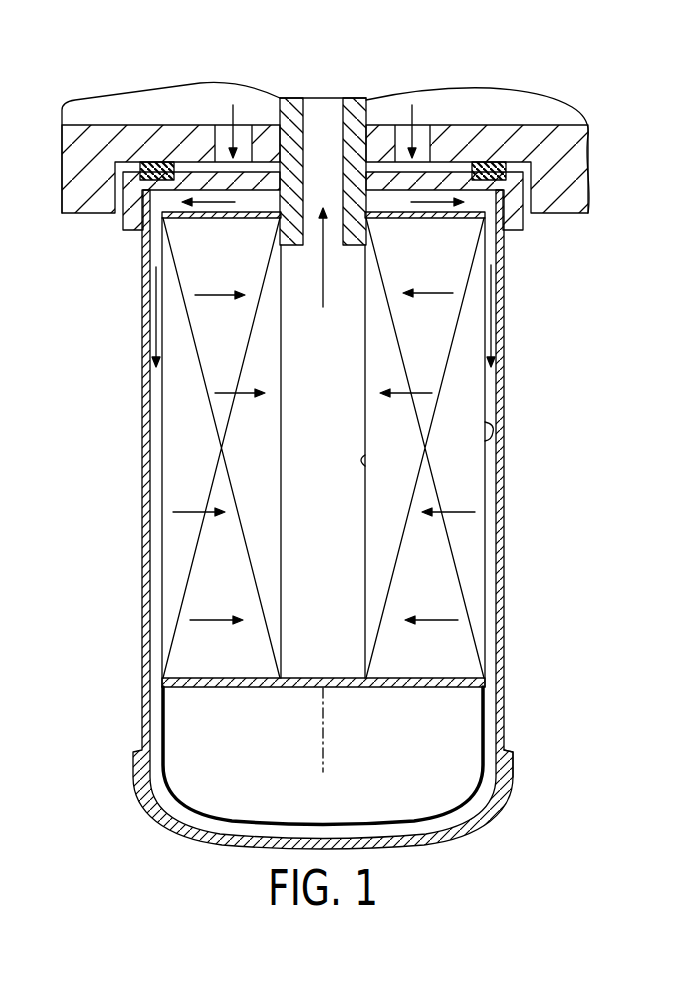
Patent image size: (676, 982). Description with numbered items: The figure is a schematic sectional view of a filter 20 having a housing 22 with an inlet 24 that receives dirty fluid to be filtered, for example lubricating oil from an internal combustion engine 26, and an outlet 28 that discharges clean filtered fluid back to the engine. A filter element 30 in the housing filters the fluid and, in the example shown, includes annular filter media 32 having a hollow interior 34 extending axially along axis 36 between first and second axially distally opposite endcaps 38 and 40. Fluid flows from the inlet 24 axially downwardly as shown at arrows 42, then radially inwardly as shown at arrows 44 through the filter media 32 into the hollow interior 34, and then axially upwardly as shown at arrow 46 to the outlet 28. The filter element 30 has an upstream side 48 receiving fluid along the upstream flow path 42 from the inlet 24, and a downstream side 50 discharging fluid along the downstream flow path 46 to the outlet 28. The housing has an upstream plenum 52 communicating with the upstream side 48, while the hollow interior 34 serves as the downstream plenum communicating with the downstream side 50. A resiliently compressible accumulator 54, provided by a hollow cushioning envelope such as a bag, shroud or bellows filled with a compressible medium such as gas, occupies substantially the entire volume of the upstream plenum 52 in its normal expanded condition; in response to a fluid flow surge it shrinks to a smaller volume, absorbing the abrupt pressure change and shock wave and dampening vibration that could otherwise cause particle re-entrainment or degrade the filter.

The filter 20 is at (78, 313).
The housing 22 is at (141, 367).
The inlet 24 is at (420, 130).
The internal combustion engine 26 is at (565, 113).
The outlet 28 is at (318, 110).
The filter element 30 is at (157, 425).
The annular filter media 32 is at (175, 465).
The hollow interior 34 is at (340, 444).
The axis 36 is at (323, 727).
The first endcap 38 is at (222, 220).
The second endcap 40 is at (200, 678).
The upstream flow path 42 is at (499, 304).
The radially inward flow arrows 44 is at (433, 296).
The downstream flow path 46 is at (322, 263).
The upstream side 48 is at (487, 440).
The downstream side 50 is at (366, 459).
The upstream plenum 52 is at (458, 812).
The accumulator 54 is at (509, 784).